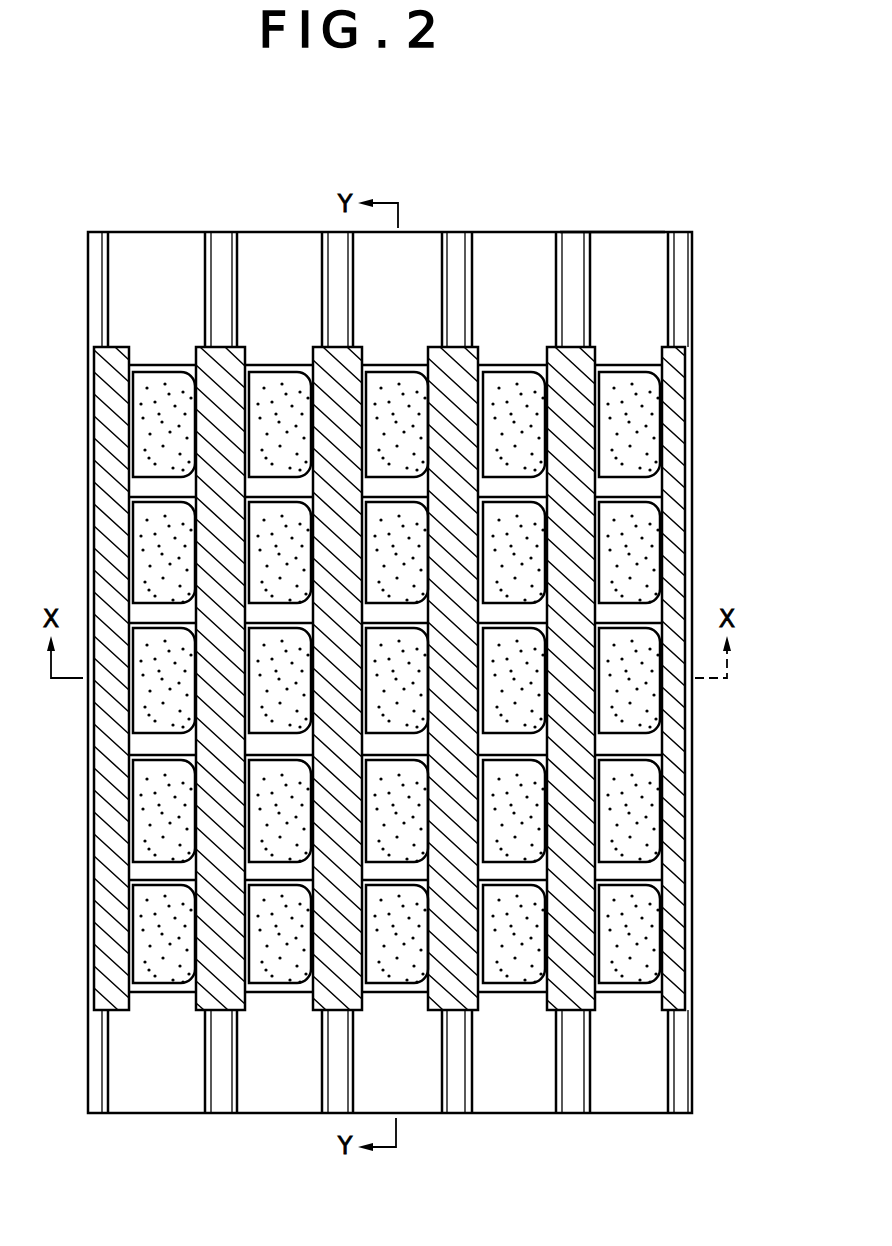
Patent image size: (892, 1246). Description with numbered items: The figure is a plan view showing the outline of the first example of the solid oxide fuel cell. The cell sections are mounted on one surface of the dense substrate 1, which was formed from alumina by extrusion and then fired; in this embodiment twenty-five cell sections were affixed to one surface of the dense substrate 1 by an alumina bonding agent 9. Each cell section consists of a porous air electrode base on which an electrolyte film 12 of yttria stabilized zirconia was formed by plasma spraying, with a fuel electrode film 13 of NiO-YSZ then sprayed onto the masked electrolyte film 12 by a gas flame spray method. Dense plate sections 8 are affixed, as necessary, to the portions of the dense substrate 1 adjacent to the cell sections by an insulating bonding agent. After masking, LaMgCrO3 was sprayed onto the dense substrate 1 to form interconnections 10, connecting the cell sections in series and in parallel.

The dense substrate 1 is at (682, 232).
The dense plate section 8 is at (610, 232).
The alumina bonding agent 9 is at (627, 993).
The interconnection 10 is at (112, 1012).
The electrolyte film 12 is at (244, 998).
The fuel electrode film 13 is at (172, 984).